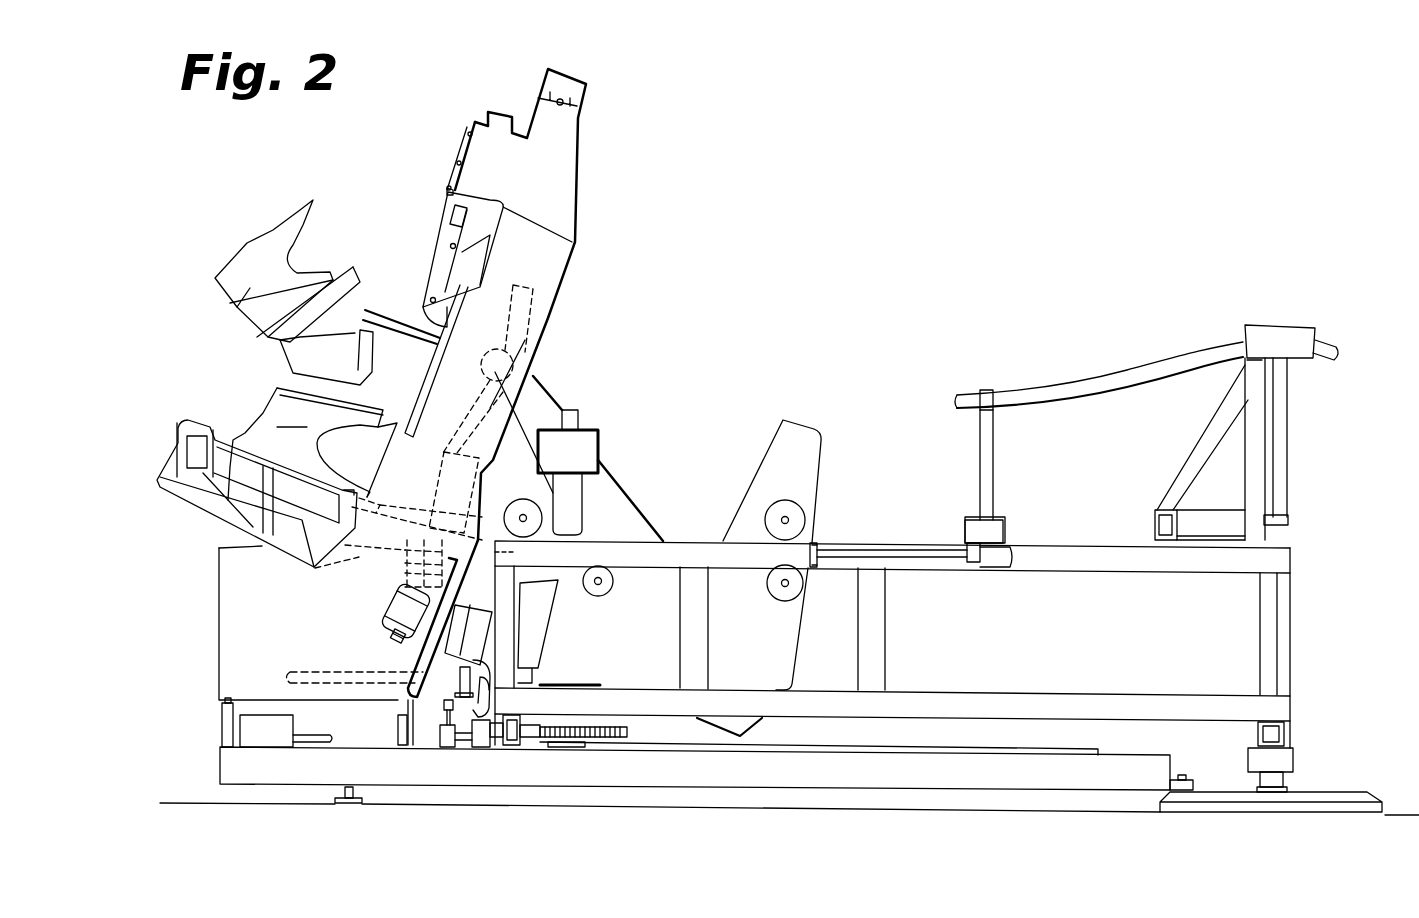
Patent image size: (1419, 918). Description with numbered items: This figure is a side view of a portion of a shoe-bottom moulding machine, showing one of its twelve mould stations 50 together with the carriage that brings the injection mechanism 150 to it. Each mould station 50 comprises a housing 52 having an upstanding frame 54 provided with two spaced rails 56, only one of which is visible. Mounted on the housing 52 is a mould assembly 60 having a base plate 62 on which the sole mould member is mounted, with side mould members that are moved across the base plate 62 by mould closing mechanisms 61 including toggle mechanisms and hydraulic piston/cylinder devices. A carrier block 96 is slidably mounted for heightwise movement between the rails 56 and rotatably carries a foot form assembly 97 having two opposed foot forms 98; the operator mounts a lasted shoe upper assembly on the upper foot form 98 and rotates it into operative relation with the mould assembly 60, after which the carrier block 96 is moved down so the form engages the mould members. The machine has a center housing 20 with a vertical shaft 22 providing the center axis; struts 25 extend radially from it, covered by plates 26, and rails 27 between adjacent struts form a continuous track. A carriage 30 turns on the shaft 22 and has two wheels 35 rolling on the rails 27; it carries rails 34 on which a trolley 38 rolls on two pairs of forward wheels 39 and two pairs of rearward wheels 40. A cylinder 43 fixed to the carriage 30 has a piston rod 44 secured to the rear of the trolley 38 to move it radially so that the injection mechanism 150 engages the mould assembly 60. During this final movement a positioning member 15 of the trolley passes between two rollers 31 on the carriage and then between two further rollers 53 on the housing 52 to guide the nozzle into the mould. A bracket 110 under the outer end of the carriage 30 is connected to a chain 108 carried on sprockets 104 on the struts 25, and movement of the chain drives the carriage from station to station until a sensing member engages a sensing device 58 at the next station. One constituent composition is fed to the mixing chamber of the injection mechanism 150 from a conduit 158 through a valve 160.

The positioning member 15 is at (377, 691).
The center housing 20 is at (1330, 793).
The vertical shaft 22 is at (1268, 792).
The struts 25 is at (1166, 764).
The plates 26 is at (968, 750).
The rails 27 is at (481, 743).
The carriage 30 is at (1066, 538).
The rollers 31 is at (501, 634).
The rails 34 is at (691, 544).
The wheels 35 is at (470, 714).
The trolley 38 is at (815, 452).
The forward wheels 39 is at (603, 572).
The rearward wheels 40 is at (774, 590).
The cylinder 43 is at (995, 568).
The piston rod 44 is at (912, 562).
The mould station 50 is at (243, 418).
The housing 52 is at (218, 652).
The rollers 53 is at (405, 665).
The upstanding frame 54 is at (527, 340).
The rails 56 is at (438, 357).
The sensing device 58 is at (438, 730).
The mould assembly 60 is at (205, 532).
The mould closing mechanisms 61 is at (160, 447).
The base plate 62 is at (285, 560).
The carrier block 96 is at (395, 340).
The foot form assembly 97 is at (282, 356).
The foot forms 98 is at (255, 253).
The sprockets 104 is at (568, 747).
The chain 108 is at (628, 735).
The bracket 110 is at (528, 720).
The injection mechanism 150 is at (643, 434).
The conduit 158 is at (392, 634).
The valve 160 is at (385, 604).